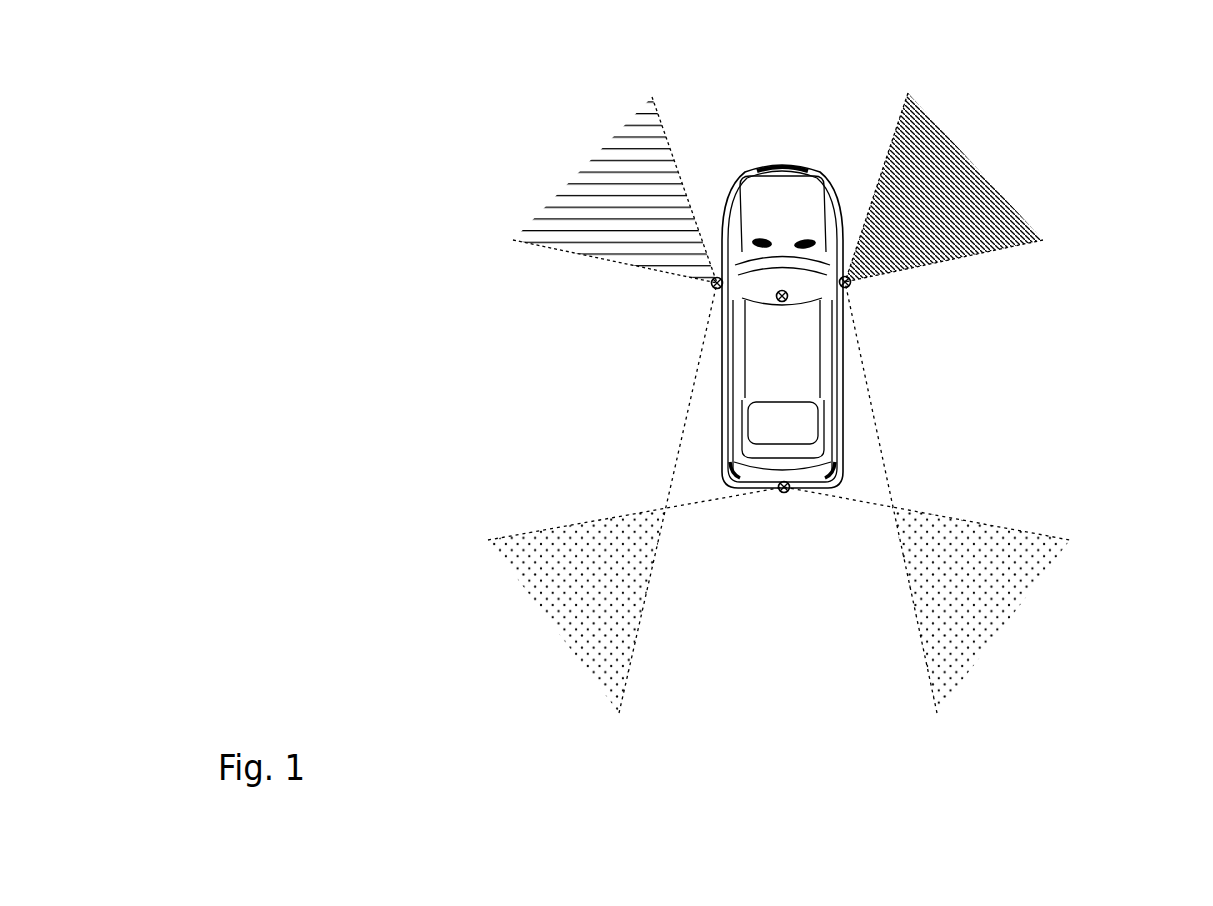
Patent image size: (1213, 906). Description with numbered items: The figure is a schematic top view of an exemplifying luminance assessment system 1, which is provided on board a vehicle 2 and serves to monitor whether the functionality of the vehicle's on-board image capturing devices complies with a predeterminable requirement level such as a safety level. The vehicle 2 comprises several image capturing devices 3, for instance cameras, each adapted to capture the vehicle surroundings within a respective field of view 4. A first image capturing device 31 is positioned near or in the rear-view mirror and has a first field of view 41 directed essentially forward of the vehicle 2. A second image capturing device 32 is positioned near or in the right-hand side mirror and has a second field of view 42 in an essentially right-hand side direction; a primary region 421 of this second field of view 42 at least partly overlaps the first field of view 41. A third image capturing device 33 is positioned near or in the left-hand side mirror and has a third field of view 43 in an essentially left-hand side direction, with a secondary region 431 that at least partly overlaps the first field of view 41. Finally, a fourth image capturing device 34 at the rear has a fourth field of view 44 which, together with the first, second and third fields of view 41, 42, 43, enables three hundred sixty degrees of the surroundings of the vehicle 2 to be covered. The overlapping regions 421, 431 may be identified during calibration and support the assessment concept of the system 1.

The luminance assessment system 1 is at (788, 407).
The vehicle 2 is at (618, 410).
The image capturing devices 3 is at (789, 430).
The first image capturing device 31 is at (789, 303).
The second image capturing device 32 is at (852, 290).
The third image capturing device 33 is at (711, 288).
The fourth image capturing device 34 is at (777, 495).
The field of view 4 is at (788, 372).
The first field of view 41 is at (707, 157).
The second field of view 42 is at (1014, 223).
The third field of view 43 is at (485, 420).
The fourth field of view 44 is at (738, 614).
The primary region 421 is at (983, 160).
The secondary region 431 is at (578, 168).